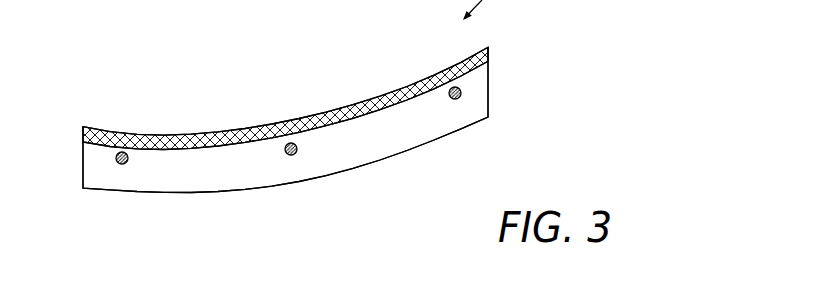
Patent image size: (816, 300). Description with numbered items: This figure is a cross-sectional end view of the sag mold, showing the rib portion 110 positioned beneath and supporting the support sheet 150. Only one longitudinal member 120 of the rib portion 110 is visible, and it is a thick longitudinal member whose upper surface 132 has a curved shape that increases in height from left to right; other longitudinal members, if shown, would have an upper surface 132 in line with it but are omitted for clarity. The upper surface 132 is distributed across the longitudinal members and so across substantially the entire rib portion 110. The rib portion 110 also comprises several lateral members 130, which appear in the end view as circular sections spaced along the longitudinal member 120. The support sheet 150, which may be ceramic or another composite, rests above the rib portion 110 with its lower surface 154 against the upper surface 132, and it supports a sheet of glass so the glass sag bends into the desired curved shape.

The rib portion 110 is at (500, 143).
The longitudinal member 120 is at (100, 180).
The lateral member 130 is at (122, 165).
The upper surface 132 is at (368, 116).
The support sheet 150 is at (405, 87).
The lower surface 154 is at (188, 149).